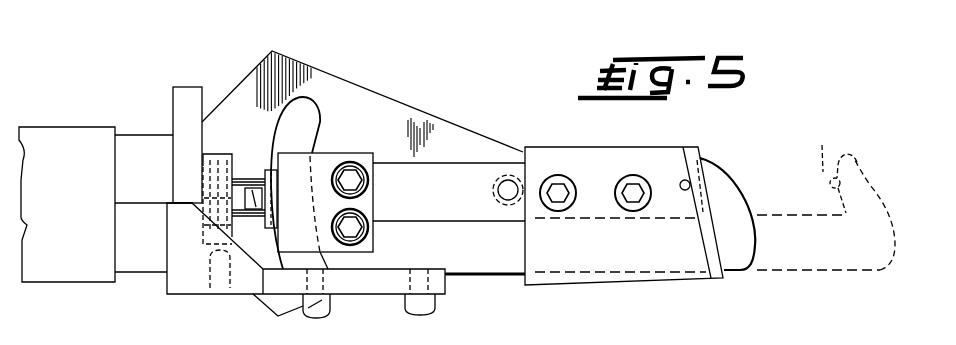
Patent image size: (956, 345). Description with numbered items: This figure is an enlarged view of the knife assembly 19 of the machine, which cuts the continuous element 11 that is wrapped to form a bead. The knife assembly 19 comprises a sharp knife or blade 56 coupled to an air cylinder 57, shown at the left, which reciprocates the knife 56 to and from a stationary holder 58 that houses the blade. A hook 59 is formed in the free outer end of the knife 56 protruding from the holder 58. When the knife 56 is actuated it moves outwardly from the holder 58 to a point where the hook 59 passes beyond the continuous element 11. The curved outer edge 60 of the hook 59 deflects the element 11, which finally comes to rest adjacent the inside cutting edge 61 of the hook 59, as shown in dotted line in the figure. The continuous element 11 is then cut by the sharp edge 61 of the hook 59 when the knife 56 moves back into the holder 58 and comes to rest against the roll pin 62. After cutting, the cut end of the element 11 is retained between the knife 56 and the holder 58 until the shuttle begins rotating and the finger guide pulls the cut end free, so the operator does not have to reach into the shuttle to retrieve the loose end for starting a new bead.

The continuous element 11 is at (822, 145).
The knife assembly 19 is at (497, 131).
The knife 56 is at (741, 257).
The air cylinder 57 is at (84, 283).
The holder 58 is at (578, 147).
The hook 59 is at (727, 197).
The curved outer edge 60 is at (747, 211).
The cutting edge 61 is at (709, 176).
The roll pin 62 is at (683, 180).